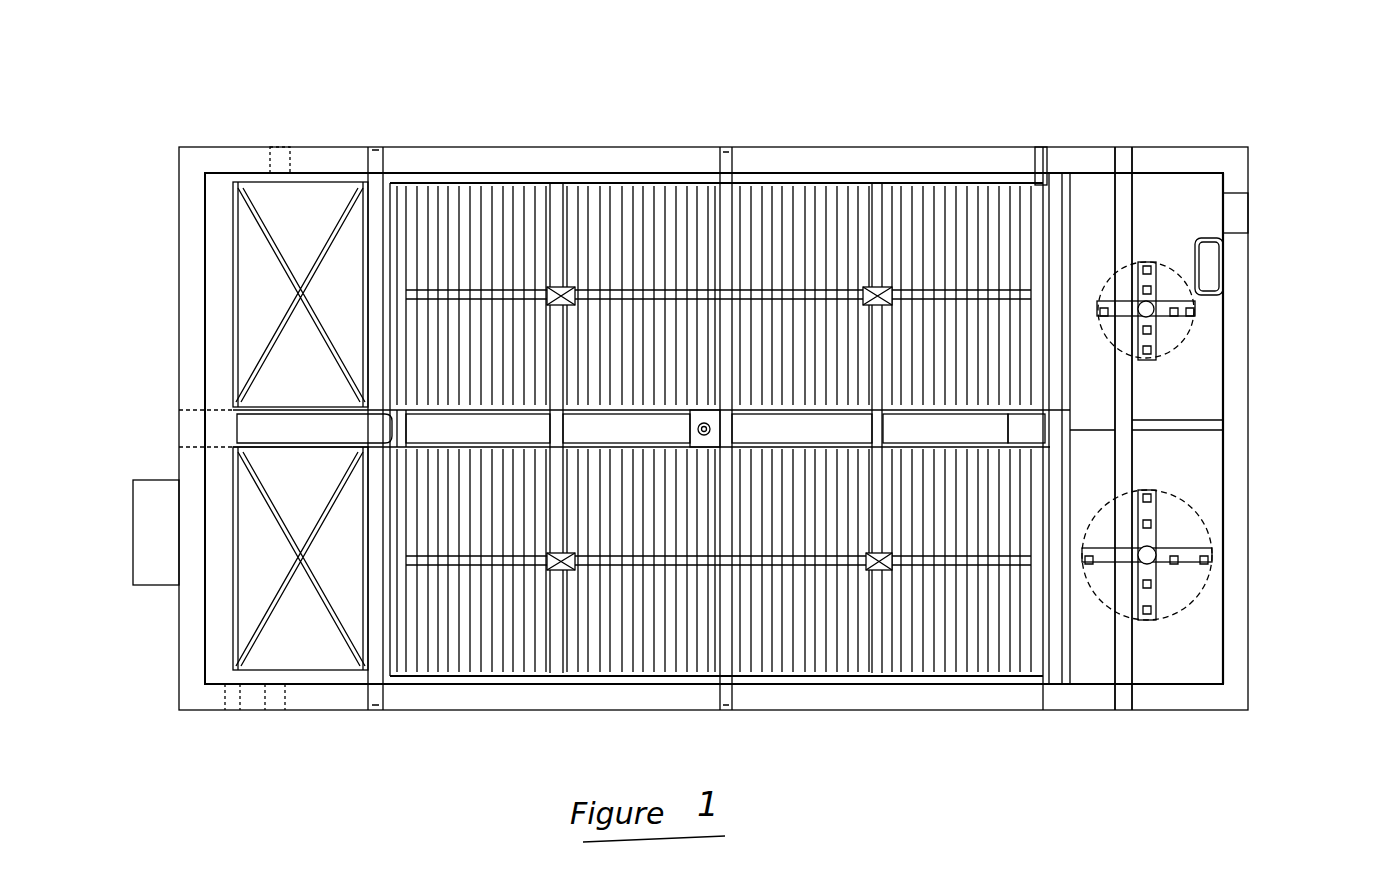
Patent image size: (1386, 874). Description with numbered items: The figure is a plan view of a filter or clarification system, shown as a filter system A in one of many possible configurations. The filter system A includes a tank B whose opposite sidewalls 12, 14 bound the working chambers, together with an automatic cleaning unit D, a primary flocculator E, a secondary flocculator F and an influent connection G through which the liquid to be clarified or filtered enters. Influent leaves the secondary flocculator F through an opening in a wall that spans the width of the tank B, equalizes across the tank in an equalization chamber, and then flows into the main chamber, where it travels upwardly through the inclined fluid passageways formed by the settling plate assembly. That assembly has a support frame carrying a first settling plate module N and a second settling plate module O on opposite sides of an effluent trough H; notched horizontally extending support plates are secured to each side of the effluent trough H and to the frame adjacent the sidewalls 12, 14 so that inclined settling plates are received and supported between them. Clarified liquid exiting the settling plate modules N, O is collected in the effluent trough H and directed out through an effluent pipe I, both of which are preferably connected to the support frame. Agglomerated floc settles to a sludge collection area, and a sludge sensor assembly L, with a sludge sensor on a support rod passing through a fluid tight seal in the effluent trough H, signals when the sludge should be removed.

The filter system A is at (812, 92).
The tank B is at (1197, 140).
The automatic cleaning unit D is at (898, 260).
The primary flocculator E is at (1181, 374).
The secondary flocculator F is at (1205, 613).
The influent connection G is at (1266, 212).
The effluent trough H is at (624, 428).
The effluent pipe I is at (292, 432).
The sludge sensor assembly L is at (676, 425).
The first settling plate module N is at (492, 200).
The second settling plate module O is at (471, 640).
The sidewall 12 is at (1082, 158).
The sidewall 14 is at (938, 699).